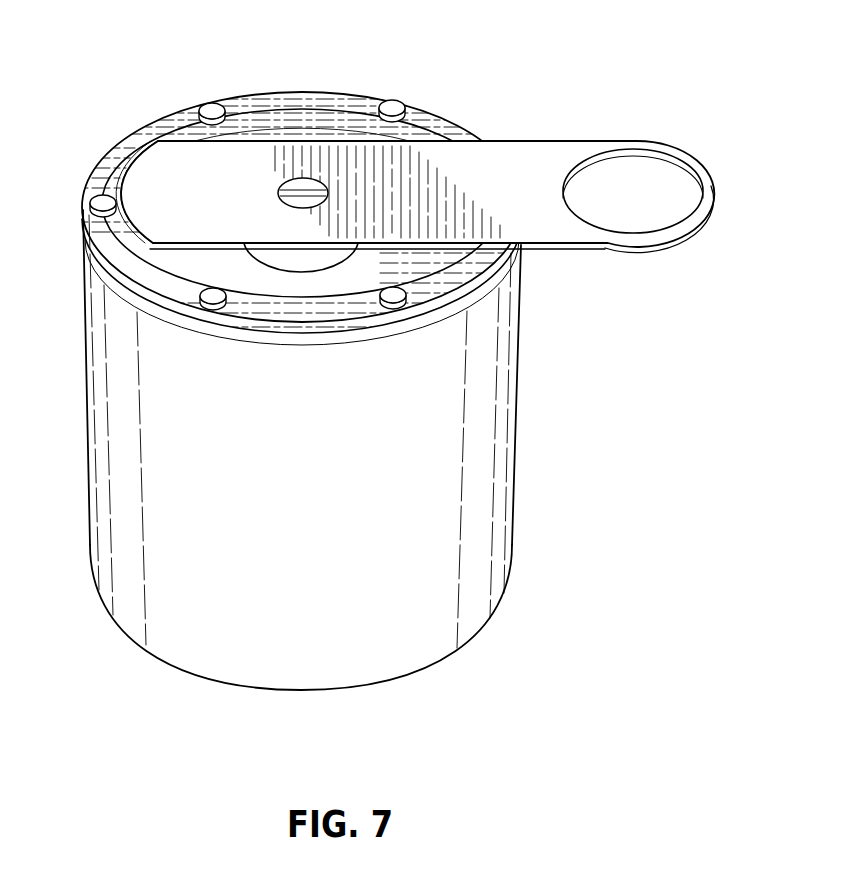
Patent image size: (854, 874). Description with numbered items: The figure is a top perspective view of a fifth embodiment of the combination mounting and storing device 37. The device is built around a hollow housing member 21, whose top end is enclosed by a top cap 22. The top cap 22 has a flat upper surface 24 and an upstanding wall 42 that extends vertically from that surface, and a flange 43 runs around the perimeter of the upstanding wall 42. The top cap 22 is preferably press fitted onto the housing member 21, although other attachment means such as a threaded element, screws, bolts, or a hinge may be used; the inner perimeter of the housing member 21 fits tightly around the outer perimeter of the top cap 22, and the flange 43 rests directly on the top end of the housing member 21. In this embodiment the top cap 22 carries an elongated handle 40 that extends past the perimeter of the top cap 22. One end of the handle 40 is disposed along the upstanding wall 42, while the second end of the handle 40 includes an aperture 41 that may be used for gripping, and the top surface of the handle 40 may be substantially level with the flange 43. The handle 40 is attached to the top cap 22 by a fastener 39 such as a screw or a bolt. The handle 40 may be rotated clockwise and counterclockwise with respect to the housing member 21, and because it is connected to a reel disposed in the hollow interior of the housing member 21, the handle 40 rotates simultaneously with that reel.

The housing member 21 is at (507, 450).
The top cap 22 is at (260, 128).
The flat upper surface 24 is at (194, 266).
The combination mounting and storing device 37 is at (552, 343).
The fastener 39 is at (303, 179).
The elongated handle 40 is at (460, 160).
The aperture 41 is at (680, 202).
The upstanding wall 42 is at (368, 133).
The flange 43 is at (130, 148).